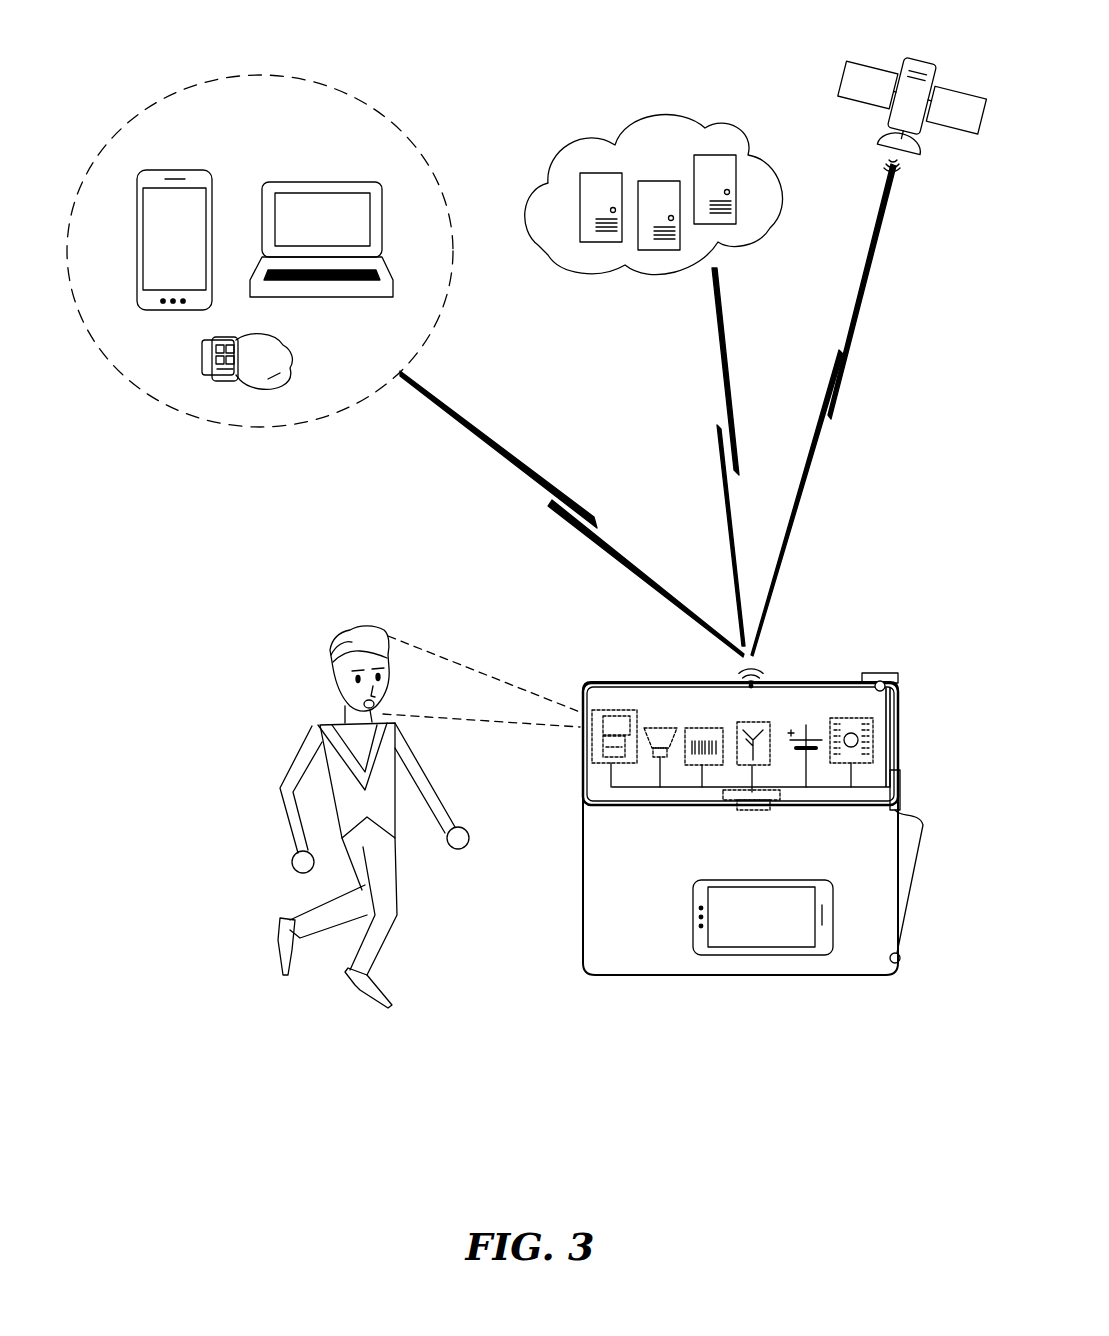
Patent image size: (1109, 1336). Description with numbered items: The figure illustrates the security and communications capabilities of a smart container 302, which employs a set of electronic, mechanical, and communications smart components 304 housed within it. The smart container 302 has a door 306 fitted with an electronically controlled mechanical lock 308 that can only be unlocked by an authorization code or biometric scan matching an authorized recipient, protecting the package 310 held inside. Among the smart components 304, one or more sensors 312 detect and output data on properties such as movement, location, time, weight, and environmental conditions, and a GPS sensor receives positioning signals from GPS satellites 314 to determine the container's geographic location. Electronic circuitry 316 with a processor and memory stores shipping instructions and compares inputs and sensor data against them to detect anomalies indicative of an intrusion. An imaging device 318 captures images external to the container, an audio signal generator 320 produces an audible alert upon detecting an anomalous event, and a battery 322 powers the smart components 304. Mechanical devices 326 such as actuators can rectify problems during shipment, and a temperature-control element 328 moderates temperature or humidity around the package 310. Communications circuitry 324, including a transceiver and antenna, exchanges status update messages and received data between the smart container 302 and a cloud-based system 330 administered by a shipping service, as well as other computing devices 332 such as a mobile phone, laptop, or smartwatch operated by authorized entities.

The smart container 302 is at (631, 946).
The smart components 304 is at (622, 806).
The door 306 is at (372, 632).
The mechanical lock 308 is at (914, 790).
The package 310 is at (830, 880).
The sensors 312 is at (703, 745).
The GPS satellites 314 is at (915, 58).
The electronic circuitry 316 is at (851, 741).
The imaging device 318 is at (614, 737).
The audio signal generator 320 is at (660, 745).
The battery 322 is at (807, 745).
The communications circuitry 324 is at (753, 745).
The mechanical devices 326 is at (879, 670).
The temperature-control element 328 is at (751, 814).
The cloud-based system 330 is at (637, 158).
The computing devices 332 is at (252, 126).